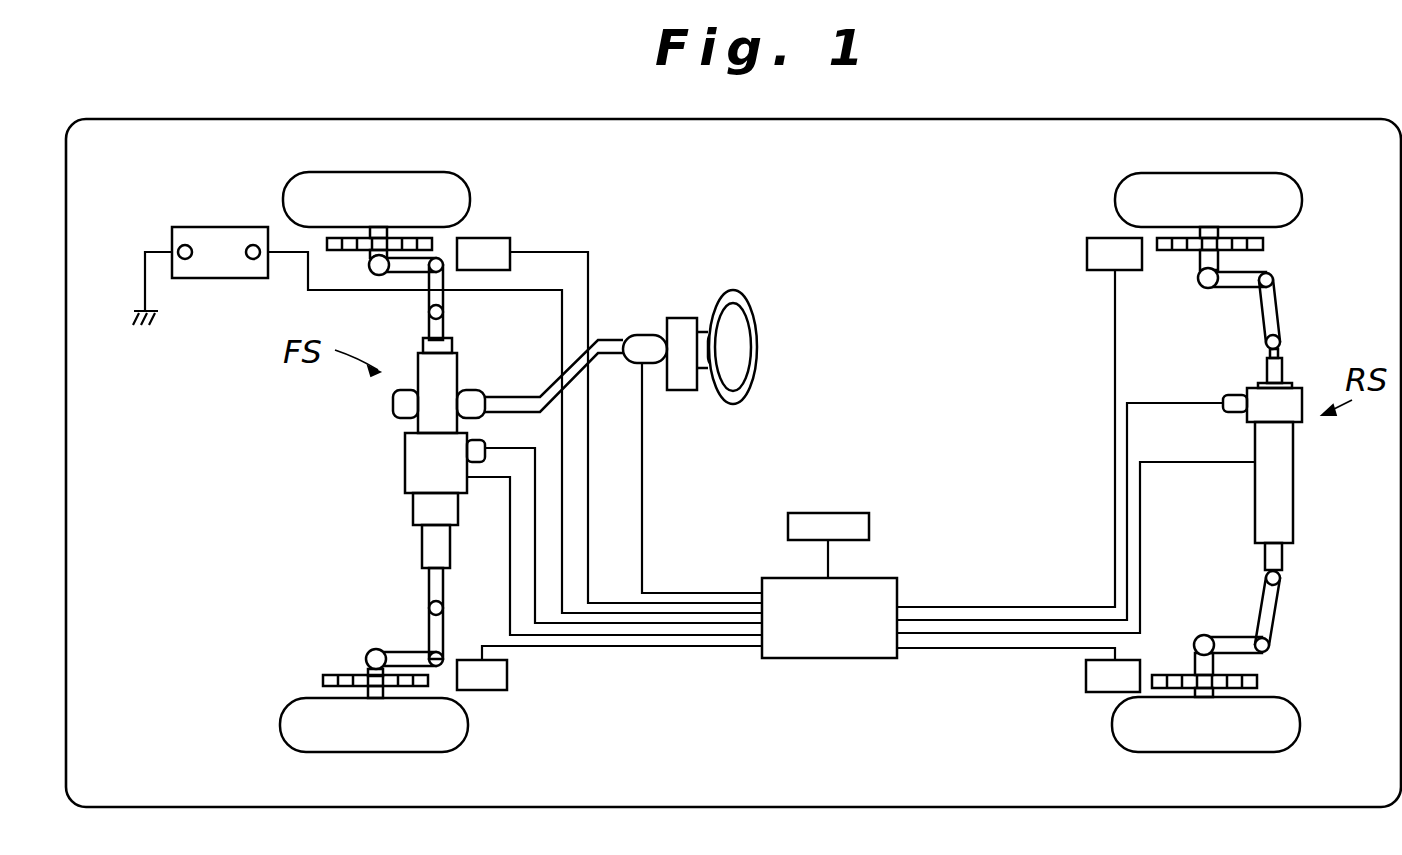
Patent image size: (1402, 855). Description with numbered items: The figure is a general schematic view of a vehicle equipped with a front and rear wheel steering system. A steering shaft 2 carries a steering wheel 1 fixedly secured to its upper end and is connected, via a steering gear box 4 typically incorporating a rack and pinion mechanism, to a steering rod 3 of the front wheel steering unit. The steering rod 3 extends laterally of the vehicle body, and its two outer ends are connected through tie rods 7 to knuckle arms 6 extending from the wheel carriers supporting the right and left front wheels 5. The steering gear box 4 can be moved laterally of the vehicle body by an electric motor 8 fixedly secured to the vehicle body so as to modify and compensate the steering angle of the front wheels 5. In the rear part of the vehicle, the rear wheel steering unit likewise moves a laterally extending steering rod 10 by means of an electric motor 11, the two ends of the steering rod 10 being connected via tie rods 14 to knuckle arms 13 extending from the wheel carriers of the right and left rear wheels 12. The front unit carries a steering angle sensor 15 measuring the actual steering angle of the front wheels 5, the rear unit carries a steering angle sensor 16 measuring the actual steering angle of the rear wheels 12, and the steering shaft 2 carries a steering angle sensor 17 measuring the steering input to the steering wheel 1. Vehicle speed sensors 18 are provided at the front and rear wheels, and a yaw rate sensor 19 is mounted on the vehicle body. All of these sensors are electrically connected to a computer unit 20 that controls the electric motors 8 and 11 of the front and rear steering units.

The steering wheel 1 is at (740, 296).
The steering shaft 2 is at (508, 393).
The steering rod 3 is at (444, 590).
The steering gear box 4 is at (413, 517).
The front wheels 5 is at (284, 192).
The knuckle arms 6 is at (408, 280).
The tie rods 7 is at (440, 297).
The electric motor 8 is at (405, 480).
The steering rod 10 is at (1287, 370).
The electric motor 11 is at (1293, 490).
The rear wheels 12 is at (1302, 192).
The knuckle arms 13 is at (1236, 290).
The tie rods 14 is at (1277, 297).
The steering angle sensor 15 is at (412, 452).
The steering angle sensor 16 is at (1230, 393).
The steering angle sensor 17 is at (643, 335).
The vehicle speed sensors 18 is at (496, 237).
The yaw rate sensor 19 is at (851, 512).
The computer unit 20 is at (873, 662).